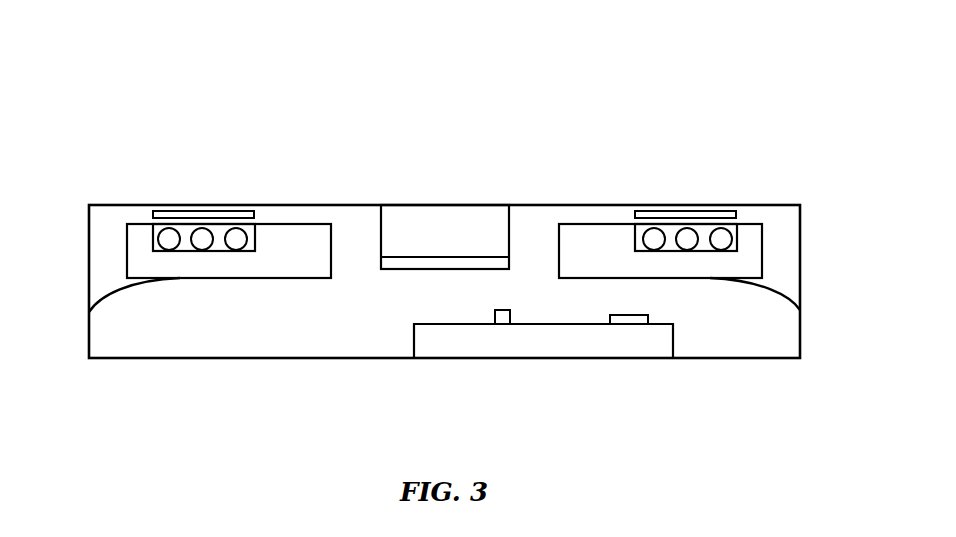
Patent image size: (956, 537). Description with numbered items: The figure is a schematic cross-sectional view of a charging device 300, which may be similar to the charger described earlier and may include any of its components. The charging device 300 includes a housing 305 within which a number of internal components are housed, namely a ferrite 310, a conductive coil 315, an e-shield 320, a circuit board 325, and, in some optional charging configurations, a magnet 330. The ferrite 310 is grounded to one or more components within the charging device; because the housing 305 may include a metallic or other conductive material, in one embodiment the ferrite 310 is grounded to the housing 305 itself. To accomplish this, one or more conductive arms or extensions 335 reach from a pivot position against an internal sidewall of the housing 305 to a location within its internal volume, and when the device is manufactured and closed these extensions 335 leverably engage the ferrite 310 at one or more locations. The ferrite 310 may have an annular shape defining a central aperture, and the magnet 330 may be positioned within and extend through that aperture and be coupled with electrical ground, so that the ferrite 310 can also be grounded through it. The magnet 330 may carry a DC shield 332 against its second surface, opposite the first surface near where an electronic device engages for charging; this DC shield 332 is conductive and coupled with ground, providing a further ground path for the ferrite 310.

The charging device 300 is at (97, 101).
The housing 305 is at (800, 248).
The ferrite 310 is at (125, 240).
The conductive coil 315 is at (723, 230).
The e-shield 320 is at (223, 212).
The circuit board 325 is at (673, 340).
The magnet 330 is at (510, 223).
The DC shield 332 is at (381, 257).
The conductive arms or extensions 335 is at (120, 289).